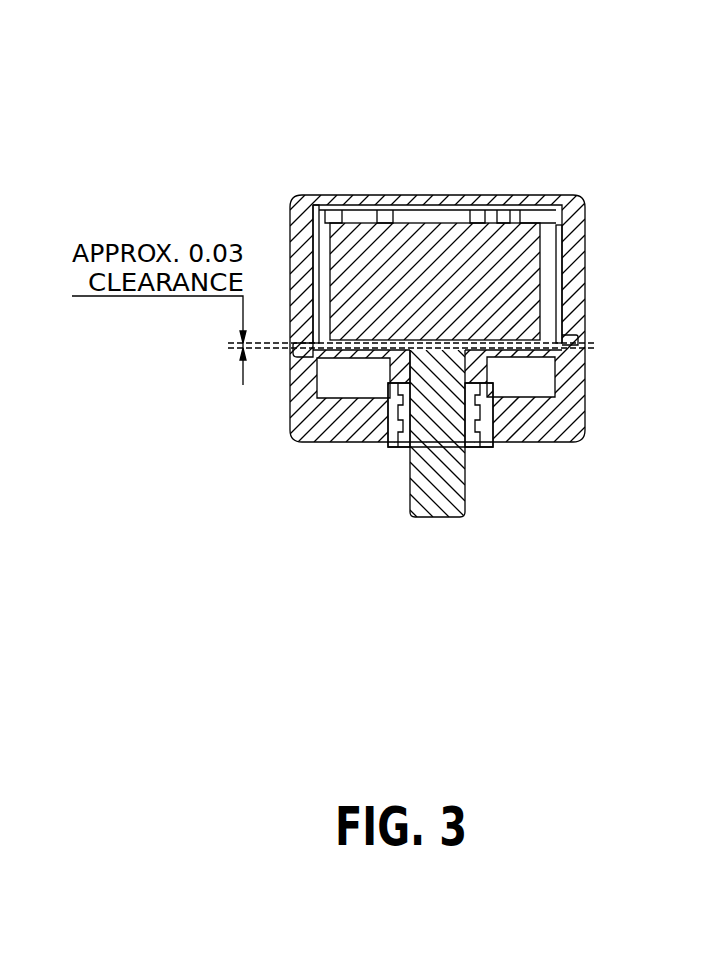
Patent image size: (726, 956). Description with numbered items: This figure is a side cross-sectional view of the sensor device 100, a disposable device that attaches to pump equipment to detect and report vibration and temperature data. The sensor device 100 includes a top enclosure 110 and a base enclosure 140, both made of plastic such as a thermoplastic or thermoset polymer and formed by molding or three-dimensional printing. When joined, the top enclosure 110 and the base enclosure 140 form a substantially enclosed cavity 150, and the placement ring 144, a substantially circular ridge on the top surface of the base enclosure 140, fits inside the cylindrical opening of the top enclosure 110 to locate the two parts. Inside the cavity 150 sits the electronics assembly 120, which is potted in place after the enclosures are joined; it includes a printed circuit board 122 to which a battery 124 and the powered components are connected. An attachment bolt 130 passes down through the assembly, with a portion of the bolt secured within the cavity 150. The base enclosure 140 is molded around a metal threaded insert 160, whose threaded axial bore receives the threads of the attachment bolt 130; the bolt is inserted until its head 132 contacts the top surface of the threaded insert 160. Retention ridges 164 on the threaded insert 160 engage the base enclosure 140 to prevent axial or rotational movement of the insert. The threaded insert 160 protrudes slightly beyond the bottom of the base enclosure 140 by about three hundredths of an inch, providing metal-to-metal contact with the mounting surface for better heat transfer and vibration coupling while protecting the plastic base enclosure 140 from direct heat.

The sensor device 100 is at (548, 52).
The top enclosure 110 is at (298, 210).
The electronics assembly 120 is at (562, 265).
The printed circuit board 122 is at (548, 240).
The battery 124 is at (473, 245).
The attachment bolt 130 is at (407, 507).
The head 132 is at (483, 378).
The base enclosure 140 is at (295, 425).
The placement ring 144 is at (560, 393).
The cavity 150 is at (532, 390).
The threaded insert 160 is at (390, 448).
The retention ridges 164 is at (477, 417).